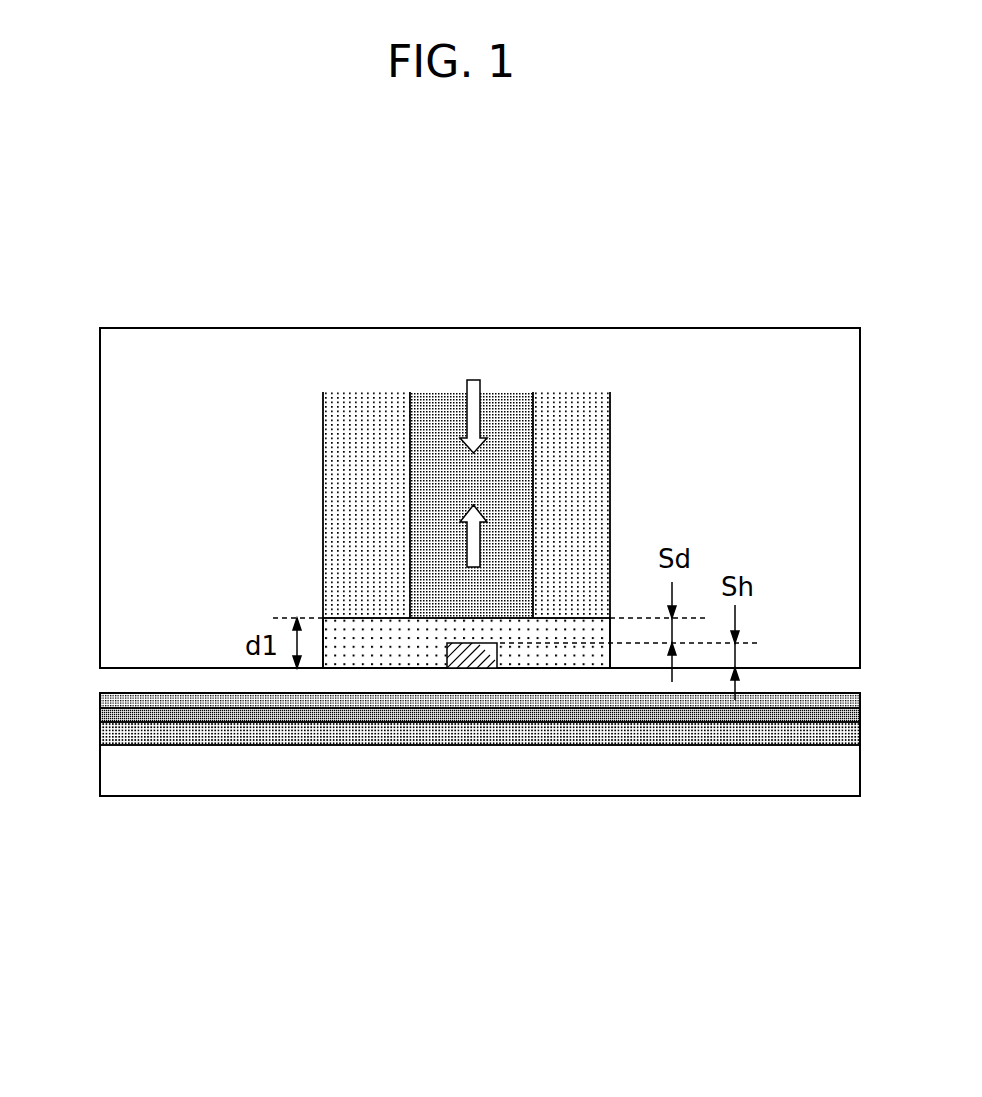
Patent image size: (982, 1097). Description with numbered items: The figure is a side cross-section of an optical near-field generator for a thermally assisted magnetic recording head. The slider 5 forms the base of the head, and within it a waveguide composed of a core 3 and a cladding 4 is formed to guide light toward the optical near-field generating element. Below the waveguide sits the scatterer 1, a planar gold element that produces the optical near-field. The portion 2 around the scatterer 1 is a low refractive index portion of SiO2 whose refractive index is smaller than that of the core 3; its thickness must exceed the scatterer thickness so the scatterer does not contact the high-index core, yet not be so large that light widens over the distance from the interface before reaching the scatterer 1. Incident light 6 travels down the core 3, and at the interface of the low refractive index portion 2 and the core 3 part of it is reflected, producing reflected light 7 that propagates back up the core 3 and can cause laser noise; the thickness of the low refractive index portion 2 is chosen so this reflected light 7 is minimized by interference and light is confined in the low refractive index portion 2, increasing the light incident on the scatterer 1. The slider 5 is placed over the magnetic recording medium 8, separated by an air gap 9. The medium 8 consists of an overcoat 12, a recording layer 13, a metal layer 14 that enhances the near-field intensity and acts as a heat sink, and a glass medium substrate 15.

The scatterer 1 is at (474, 660).
The low refractive index portion 2 is at (383, 632).
The waveguide core 3 is at (500, 483).
The cladding 4 is at (567, 533).
The slider 5 is at (156, 405).
The incident light 6 is at (479, 368).
The reflected light 7 is at (455, 537).
The magnetic recording medium 8 is at (88, 694).
The air gap 9 is at (642, 684).
The overcoat 12 is at (585, 704).
The recording layer 13 is at (415, 712).
The metal layer 14 is at (318, 733).
The medium substrate 15 is at (243, 767).